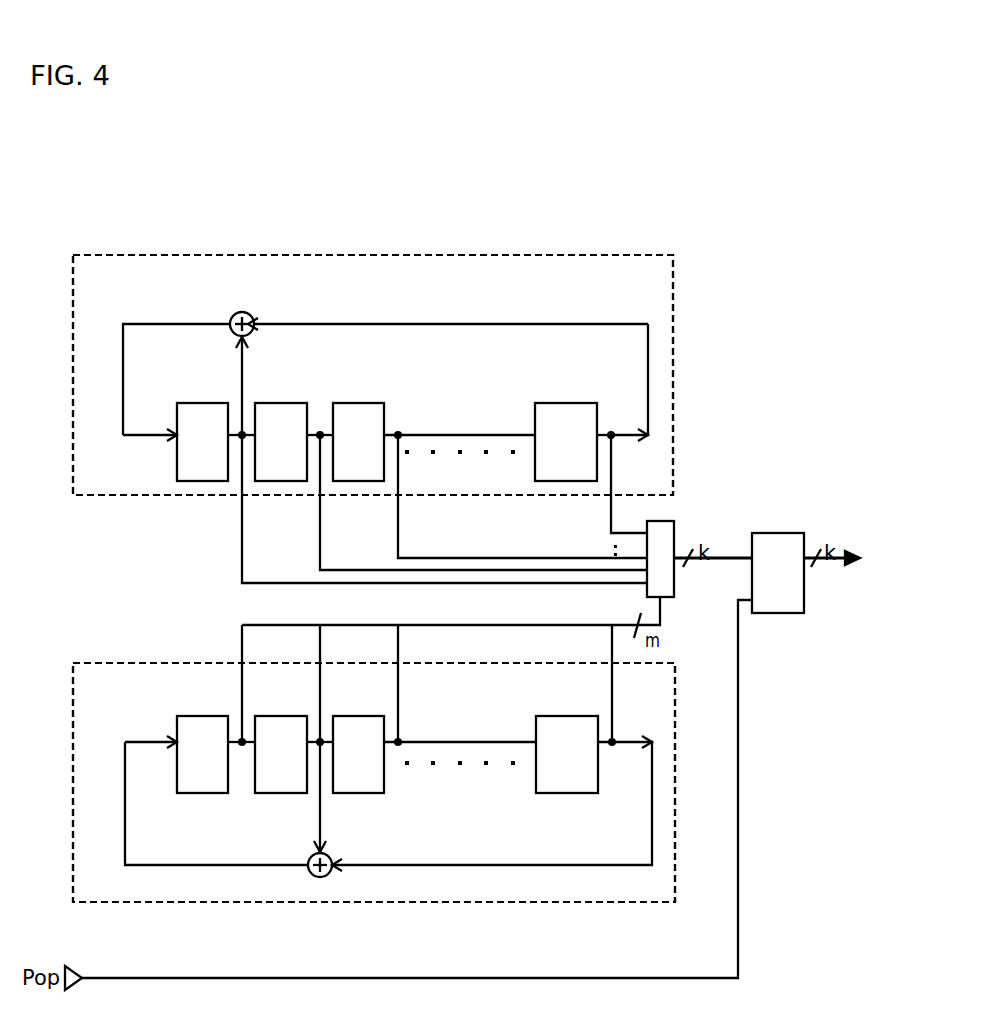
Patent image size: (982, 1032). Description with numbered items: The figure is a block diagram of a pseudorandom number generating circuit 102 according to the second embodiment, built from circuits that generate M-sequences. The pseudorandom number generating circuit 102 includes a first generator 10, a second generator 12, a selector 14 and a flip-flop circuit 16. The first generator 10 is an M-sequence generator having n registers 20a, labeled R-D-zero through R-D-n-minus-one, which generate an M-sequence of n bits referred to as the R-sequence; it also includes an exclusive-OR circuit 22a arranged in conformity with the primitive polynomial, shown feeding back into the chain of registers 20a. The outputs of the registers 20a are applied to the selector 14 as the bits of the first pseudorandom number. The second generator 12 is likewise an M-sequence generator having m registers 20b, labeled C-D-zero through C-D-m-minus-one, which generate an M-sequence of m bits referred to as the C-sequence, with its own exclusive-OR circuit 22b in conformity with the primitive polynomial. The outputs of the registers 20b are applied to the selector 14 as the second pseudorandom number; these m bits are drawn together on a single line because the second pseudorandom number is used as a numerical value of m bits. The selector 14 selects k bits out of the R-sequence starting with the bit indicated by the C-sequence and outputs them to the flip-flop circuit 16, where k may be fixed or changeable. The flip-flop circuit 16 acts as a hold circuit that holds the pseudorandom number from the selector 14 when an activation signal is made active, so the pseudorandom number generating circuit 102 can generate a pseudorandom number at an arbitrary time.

The pseudorandom number generating circuit 102 is at (707, 257).
The first generator 10 is at (673, 303).
The second generator 12 is at (675, 735).
The selector 14 is at (674, 521).
The flip-flop circuit 16 is at (804, 533).
The registers 20a is at (220, 403).
The registers 20b is at (197, 716).
The exclusive-OR circuit 22a is at (245, 312).
The exclusive-OR circuit 22b is at (332, 857).